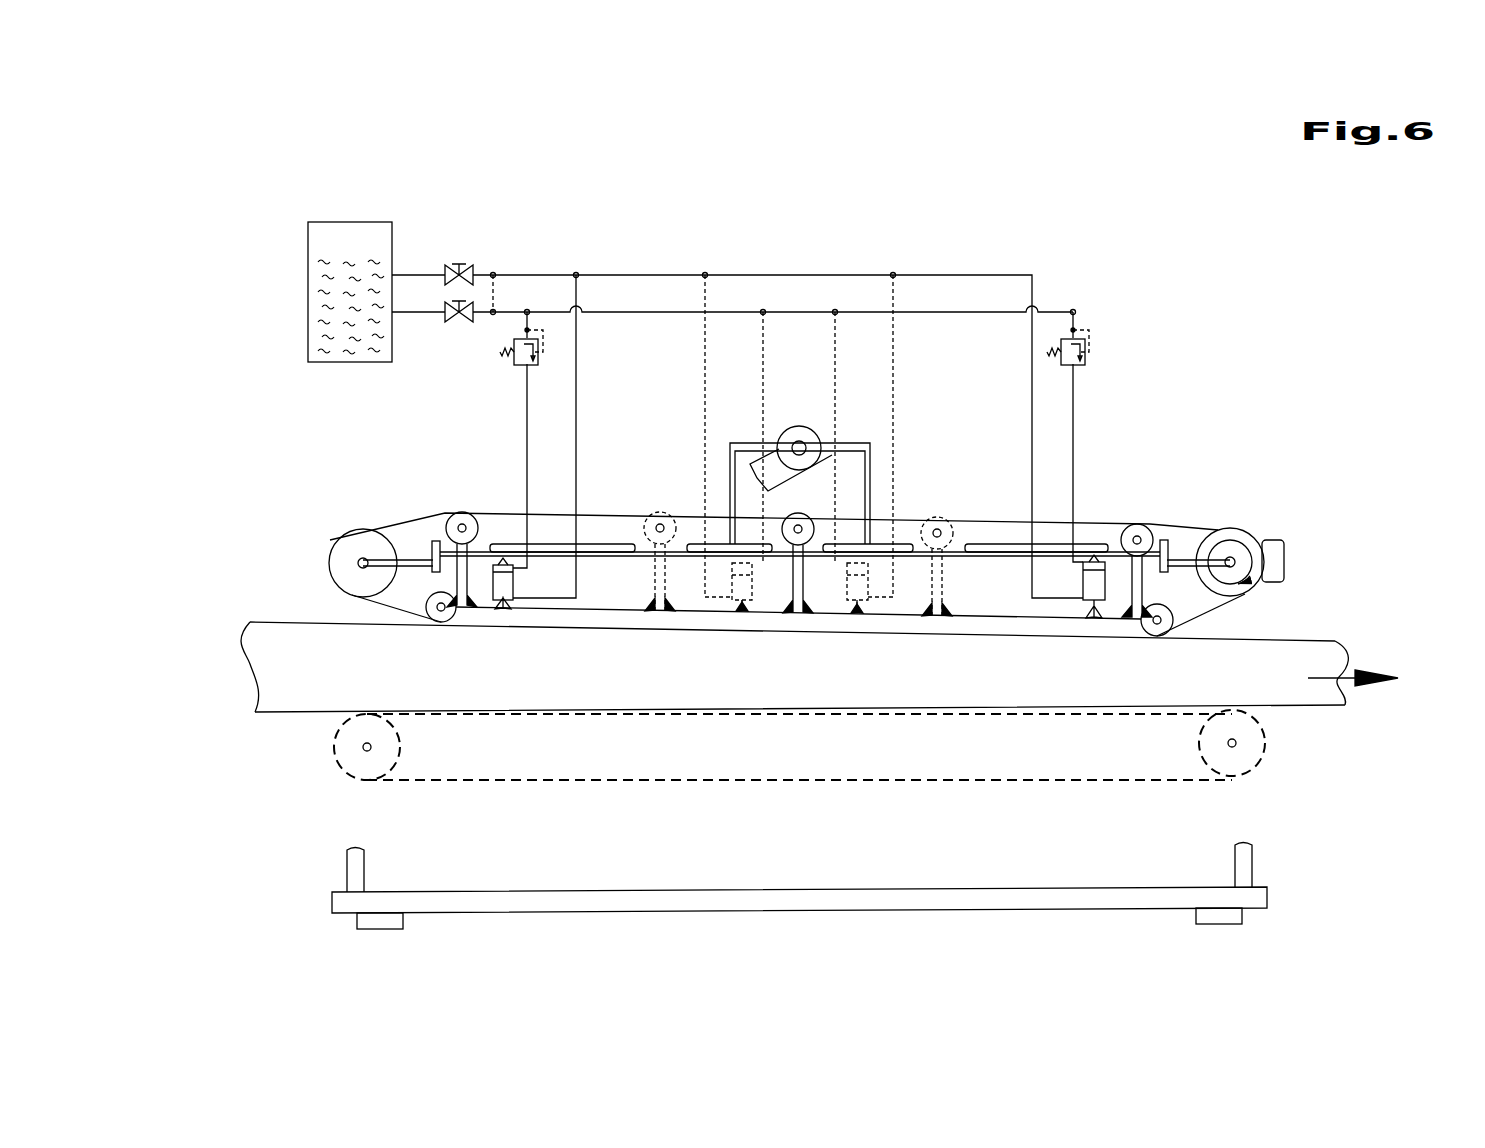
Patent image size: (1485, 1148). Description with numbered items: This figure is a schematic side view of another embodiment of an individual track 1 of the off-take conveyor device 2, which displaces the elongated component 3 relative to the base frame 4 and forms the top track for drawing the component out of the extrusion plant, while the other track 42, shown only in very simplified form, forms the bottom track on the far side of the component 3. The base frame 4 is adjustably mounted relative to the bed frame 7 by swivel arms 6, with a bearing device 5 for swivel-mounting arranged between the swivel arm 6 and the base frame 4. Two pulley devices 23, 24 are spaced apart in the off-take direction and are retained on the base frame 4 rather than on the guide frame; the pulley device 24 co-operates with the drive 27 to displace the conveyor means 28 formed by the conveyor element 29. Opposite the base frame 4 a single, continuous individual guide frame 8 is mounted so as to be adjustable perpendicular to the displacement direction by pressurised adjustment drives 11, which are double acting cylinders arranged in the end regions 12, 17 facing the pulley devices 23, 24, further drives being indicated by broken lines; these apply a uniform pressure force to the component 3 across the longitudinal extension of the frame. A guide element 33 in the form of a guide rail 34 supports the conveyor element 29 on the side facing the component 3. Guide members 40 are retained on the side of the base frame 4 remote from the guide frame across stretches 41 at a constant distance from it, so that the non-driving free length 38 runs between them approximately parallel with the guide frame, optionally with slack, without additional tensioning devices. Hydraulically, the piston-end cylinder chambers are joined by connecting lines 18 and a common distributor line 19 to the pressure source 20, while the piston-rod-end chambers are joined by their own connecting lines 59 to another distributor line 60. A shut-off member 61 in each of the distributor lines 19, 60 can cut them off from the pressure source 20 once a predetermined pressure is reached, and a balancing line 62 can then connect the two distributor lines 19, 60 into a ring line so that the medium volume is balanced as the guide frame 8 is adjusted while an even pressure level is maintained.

The individual track 1 is at (1360, 456).
The off-take conveyor device 2 is at (1290, 456).
The elongated component 3 is at (1300, 665).
The base frame 4 is at (975, 550).
The bearing device 5 is at (801, 422).
The swivel arm 6 is at (771, 468).
The bed frame 7 is at (1302, 866).
The individual guide frame 8 is at (558, 628).
The adjustment drive 11 is at (521, 588).
The end region 12 is at (465, 638).
The end region 17 is at (1130, 646).
The connecting line 18 is at (528, 416).
The distributor line 19 is at (610, 310).
The pressure source 20 is at (355, 220).
The pulley device 23 is at (306, 530).
The pulley device 24 is at (1289, 529).
The drive 27 is at (1275, 565).
The conveyor means 28 is at (390, 520).
The conveyor element 29 is at (433, 512).
The guide element 33 is at (829, 625).
The guide rail 34 is at (1013, 625).
The non-driving free length 38 is at (661, 511).
The guide member 40 is at (464, 511).
The stretch 41 is at (1166, 570).
The track 42 is at (1292, 736).
The connecting line 59 is at (582, 353).
The distributor line 60 is at (661, 272).
The shut-off member 61 is at (467, 252).
The balancing line 62 is at (497, 292).